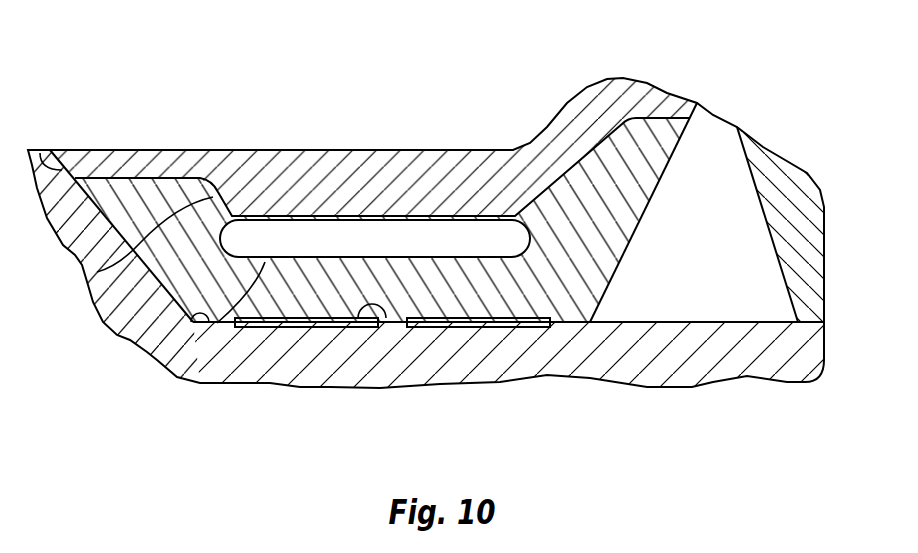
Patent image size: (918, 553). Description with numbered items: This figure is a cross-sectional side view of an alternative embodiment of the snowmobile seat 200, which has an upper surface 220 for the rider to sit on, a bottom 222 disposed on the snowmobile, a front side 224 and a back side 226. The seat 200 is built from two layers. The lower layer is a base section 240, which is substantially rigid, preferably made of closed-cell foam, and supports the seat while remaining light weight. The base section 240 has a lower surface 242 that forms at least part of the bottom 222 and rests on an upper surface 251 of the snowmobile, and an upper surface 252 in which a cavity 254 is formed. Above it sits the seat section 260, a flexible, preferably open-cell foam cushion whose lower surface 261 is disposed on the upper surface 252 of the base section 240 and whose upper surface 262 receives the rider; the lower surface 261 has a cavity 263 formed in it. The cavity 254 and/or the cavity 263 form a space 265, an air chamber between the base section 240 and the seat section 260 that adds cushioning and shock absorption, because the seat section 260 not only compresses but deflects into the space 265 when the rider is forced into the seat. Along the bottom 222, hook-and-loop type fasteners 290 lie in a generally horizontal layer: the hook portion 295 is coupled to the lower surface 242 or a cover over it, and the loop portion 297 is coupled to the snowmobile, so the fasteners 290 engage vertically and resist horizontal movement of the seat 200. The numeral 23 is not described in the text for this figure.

The snowmobile seat 200 is at (767, 80).
The upper surface 220 is at (100, 150).
The front side 224 is at (37, 148).
The back side 226 is at (825, 270).
The seat section 260 is at (327, 178).
The lower surface 261 is at (170, 172).
The upper surface 262 is at (255, 150).
The cavity 263 is at (430, 207).
The space 265 is at (291, 249).
The upper surface 252 is at (97, 272).
The cavity 254 is at (208, 326).
The base section 240 is at (108, 358).
The lower surface 242 is at (177, 345).
The bottom 222 is at (562, 327).
The upper surface 251 is at (692, 387).
The base 23 is at (779, 366).
The hook-and-loop type fasteners 290 is at (297, 338).
The hook portion 295 is at (392, 327).
The loop portion 297 is at (323, 328).